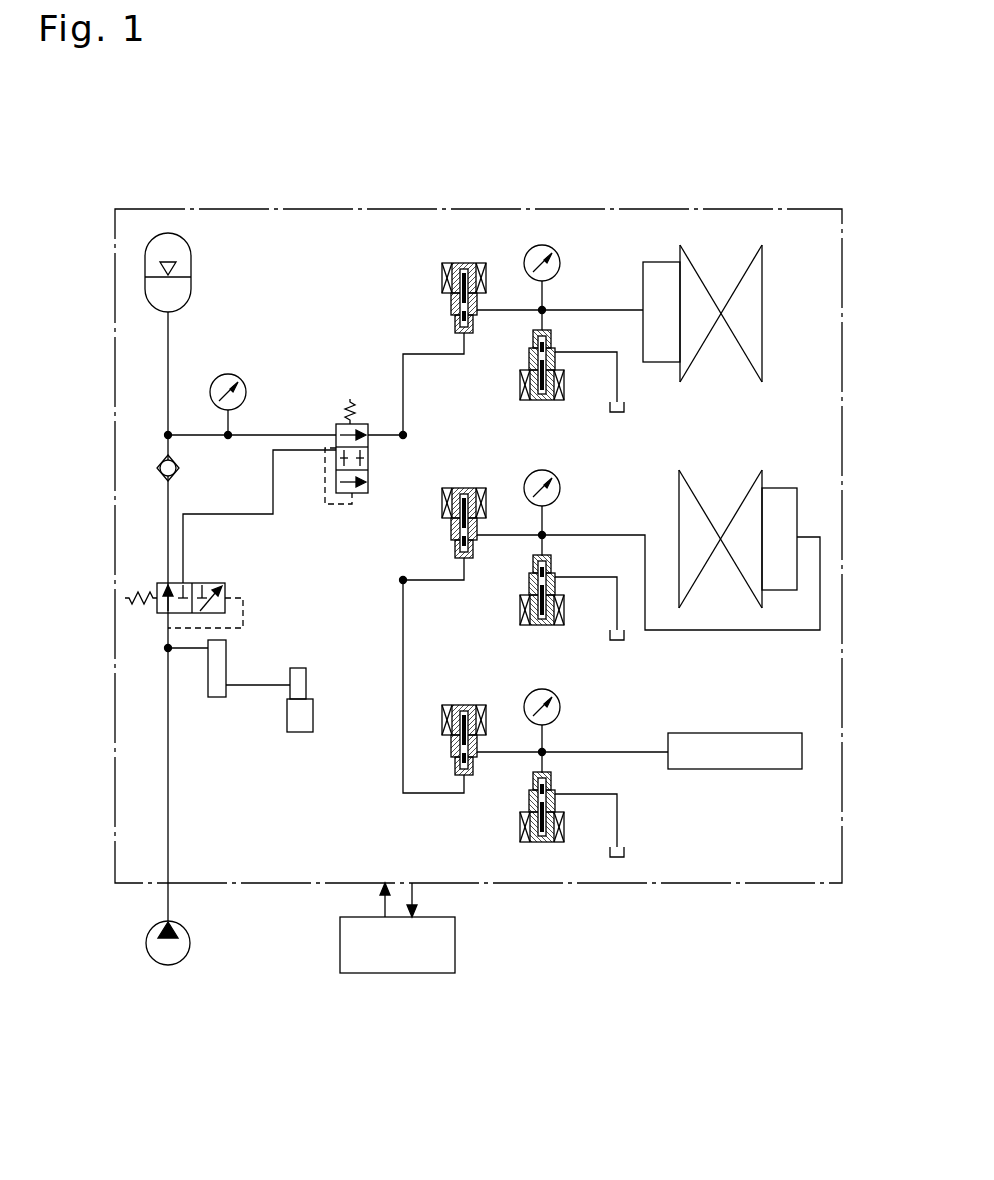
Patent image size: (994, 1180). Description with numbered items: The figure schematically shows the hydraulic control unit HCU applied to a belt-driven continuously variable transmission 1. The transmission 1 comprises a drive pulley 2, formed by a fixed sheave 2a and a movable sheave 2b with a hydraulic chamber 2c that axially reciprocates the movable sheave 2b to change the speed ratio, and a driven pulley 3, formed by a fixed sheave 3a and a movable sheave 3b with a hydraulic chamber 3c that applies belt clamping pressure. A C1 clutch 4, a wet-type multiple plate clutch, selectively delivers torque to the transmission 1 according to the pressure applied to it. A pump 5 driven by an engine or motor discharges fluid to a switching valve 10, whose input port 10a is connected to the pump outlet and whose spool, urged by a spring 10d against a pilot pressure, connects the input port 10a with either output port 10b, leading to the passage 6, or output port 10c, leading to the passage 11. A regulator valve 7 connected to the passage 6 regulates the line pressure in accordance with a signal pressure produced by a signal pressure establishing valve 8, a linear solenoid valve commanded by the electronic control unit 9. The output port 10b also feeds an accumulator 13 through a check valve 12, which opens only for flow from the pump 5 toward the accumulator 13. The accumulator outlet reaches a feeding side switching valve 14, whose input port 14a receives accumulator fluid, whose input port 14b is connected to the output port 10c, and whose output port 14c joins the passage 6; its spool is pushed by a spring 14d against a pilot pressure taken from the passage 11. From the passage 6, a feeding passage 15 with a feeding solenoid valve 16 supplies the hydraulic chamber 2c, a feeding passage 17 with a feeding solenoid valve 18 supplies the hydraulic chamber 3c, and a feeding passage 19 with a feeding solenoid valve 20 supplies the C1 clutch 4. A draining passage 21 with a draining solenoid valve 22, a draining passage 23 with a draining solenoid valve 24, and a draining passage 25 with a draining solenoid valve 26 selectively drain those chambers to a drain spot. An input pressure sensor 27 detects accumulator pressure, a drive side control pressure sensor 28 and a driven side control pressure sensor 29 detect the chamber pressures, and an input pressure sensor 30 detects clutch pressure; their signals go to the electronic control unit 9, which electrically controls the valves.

The continuously variable transmission 1 is at (723, 267).
The drive pulley 2 is at (695, 267).
The fixed sheave 2a is at (721, 299).
The movable sheave 2b is at (697, 266).
The hydraulic chamber 2c is at (662, 262).
The driven pulley 3 is at (741, 503).
The fixed sheave 3a is at (696, 490).
The movable sheave 3b is at (747, 492).
The hydraulic chamber 3c is at (760, 455).
The C1 clutch 4 is at (746, 733).
The pump 5 is at (190, 927).
The passage 6 is at (272, 435).
The regulator valve 7 is at (226, 655).
The signal pressure establishing valve 8 is at (306, 685).
The electronic control unit 9 is at (396, 973).
The switching valve 10 is at (191, 608).
The input port 10a is at (165, 613).
The output port 10b is at (165, 583).
The output port 10c is at (190, 583).
The spring 10d is at (125, 598).
The passage 11 is at (256, 514).
The check valve 12 is at (160, 458).
The accumulator 13 is at (191, 282).
The switching valve 14 is at (342, 415).
The input port 14a is at (336, 429).
The input port 14b is at (325, 455).
The output port 14c is at (368, 428).
The spring 14d is at (348, 402).
The feeding passage 15 is at (428, 354).
The feeding solenoid valve 16 is at (436, 276).
The feeding passage 17 is at (436, 581).
The feeding solenoid valve 18 is at (469, 482).
The feeding passage 19 is at (428, 794).
The feeding solenoid valve 20 is at (450, 702).
The draining passage 21 is at (617, 394).
The draining solenoid valve 22 is at (516, 386).
The draining passage 23 is at (594, 578).
The draining solenoid valve 24 is at (526, 630).
The draining passage 25 is at (619, 816).
The draining solenoid valve 26 is at (516, 830).
The input pressure sensor 27 is at (235, 376).
The drive side control pressure sensor 28 is at (560, 263).
The driven side control pressure sensor 29 is at (559, 488).
The input pressure sensor 30 is at (559, 701).
The hydraulic control unit HCU is at (297, 208).